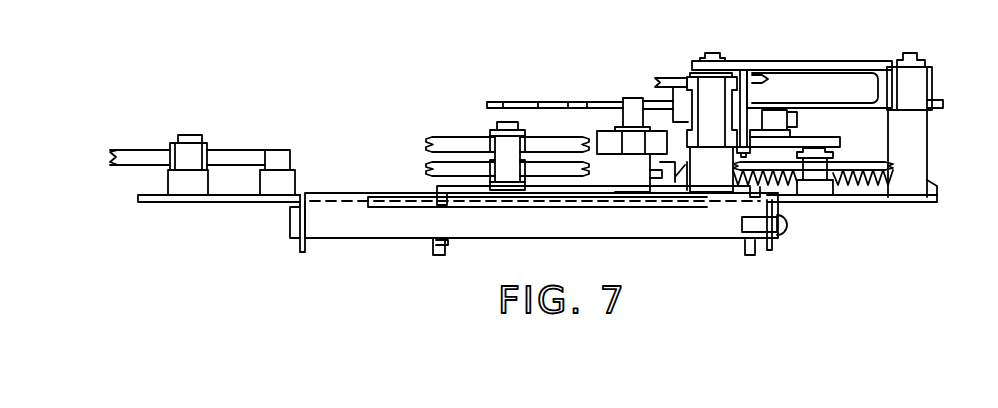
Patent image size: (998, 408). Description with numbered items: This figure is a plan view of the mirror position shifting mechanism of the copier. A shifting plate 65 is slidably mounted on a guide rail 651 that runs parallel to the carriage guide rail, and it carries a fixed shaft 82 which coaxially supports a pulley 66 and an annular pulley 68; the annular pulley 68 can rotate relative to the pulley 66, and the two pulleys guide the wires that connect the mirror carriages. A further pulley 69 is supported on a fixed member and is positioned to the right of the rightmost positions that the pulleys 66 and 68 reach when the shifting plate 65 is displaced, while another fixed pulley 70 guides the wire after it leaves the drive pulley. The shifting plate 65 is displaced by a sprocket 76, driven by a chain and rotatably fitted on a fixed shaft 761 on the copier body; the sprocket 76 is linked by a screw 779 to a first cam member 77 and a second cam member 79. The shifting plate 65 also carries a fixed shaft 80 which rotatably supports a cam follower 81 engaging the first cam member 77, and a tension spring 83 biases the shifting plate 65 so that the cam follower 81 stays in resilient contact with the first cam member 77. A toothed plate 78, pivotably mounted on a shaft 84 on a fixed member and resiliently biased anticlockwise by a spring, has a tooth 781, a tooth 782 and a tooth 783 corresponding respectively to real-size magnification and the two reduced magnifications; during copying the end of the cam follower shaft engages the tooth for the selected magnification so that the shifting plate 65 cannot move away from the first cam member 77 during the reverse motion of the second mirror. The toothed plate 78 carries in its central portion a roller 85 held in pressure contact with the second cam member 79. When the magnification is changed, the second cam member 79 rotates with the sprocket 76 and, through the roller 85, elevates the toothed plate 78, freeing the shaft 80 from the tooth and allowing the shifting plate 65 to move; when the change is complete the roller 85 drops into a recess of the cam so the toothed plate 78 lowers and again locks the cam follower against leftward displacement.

The shifting plate 65 is at (548, 188).
The guide rail 651 is at (382, 233).
The pulley 66 is at (428, 168).
The annular pulley 68 is at (443, 139).
The pulley 69 is at (893, 170).
The pulley 70 is at (232, 152).
The sprocket 76 is at (772, 70).
The fixed shaft 761 is at (707, 55).
The first cam member 77 is at (842, 140).
The toothed plate 78 is at (577, 102).
The tooth 781 is at (618, 100).
The tooth 782 is at (560, 120).
The tooth 783 is at (535, 102).
The screw 779 is at (745, 72).
The second cam member 79 is at (758, 108).
The fixed shaft 80 is at (615, 180).
The cam follower 81 is at (658, 143).
The fixed shaft 82 is at (508, 175).
The tension spring 83 is at (868, 187).
The shaft 84 is at (927, 157).
The roller 85 is at (797, 120).